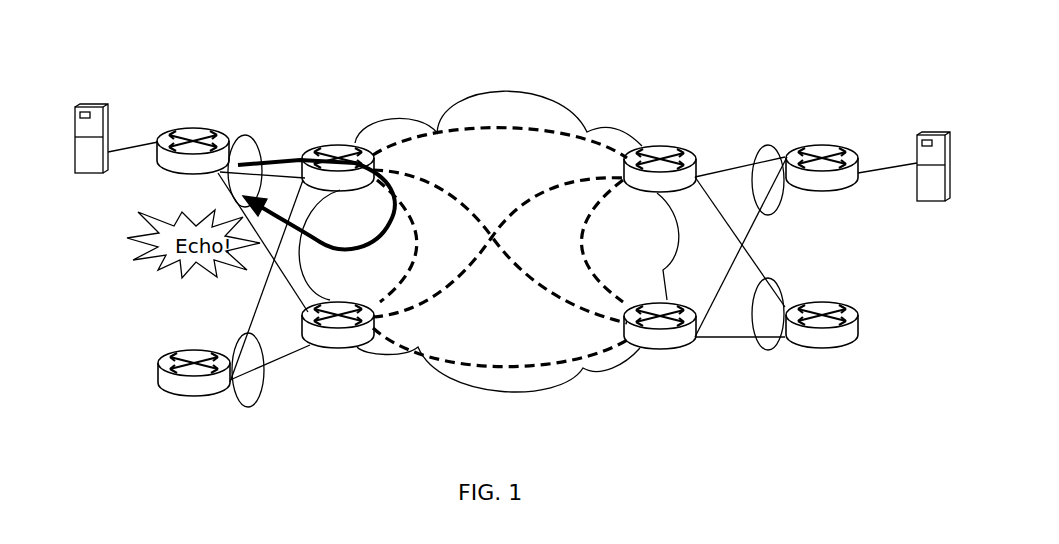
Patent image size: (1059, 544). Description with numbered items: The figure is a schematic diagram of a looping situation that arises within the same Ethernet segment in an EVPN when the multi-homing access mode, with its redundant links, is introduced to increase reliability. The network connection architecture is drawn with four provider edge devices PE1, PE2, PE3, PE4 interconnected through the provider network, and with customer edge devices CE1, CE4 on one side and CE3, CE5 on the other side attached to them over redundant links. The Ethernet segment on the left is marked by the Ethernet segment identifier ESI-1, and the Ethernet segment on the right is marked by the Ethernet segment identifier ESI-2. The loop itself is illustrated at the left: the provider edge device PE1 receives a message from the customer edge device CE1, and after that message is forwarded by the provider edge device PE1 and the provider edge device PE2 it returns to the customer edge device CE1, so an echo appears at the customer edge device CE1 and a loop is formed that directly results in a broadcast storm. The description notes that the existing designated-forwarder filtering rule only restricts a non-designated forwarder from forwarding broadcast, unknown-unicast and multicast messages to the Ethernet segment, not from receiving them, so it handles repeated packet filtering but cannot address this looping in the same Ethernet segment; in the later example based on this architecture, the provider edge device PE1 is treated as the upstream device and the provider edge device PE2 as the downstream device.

The customer edge device CE1 is at (193, 136).
The provider edge device PE1 is at (338, 153).
The provider edge device PE2 is at (338, 342).
The provider edge device PE3 is at (660, 154).
The provider edge device PE4 is at (660, 341).
The customer edge device CE3 is at (822, 152).
The customer edge device CE4 is at (211, 381).
The customer edge device CE5 is at (822, 340).
The Ethernet segment identifier ESI-1 is at (257, 123).
The Ethernet segment identifier ESI-2 is at (757, 152).